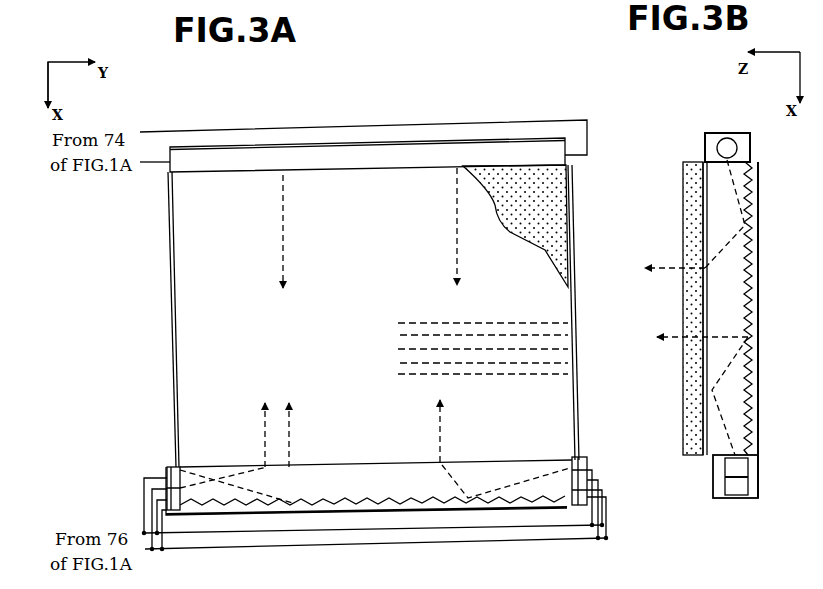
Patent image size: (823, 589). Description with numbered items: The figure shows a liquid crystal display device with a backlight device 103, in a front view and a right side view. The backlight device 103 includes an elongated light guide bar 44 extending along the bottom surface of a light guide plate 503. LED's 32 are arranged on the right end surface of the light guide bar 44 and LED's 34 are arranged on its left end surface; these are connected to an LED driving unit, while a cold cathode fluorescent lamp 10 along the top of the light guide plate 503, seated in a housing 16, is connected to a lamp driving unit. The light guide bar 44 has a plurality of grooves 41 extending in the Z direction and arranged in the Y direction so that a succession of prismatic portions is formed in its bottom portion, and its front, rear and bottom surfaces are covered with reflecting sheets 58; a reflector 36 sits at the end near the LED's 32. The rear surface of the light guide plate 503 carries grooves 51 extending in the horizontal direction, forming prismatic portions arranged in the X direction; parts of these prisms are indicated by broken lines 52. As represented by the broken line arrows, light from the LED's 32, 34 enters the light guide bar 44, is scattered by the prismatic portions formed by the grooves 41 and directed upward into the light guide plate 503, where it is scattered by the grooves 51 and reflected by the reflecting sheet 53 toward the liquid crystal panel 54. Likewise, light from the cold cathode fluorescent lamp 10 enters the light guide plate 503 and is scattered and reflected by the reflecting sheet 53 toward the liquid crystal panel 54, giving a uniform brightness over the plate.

In FIG. 3A, the cold cathode fluorescent lamp 10 is at (460, 155).
In FIG. 3B, the cold cathode fluorescent lamp 10 is at (718, 147).
In FIG. 3A, the lamp reflector 16 is at (552, 140).
In FIG. 3B, the lamp reflector 16 is at (727, 138).
In FIG. 3A, the LED's 32 is at (555, 497).
In FIG. 3B, the LED's 32 is at (730, 490).
In FIG. 3A, the LED's 34 is at (160, 488).
In FIG. 3A, the reflector 36 is at (582, 457).
In FIG. 3B, the reflector 36 is at (742, 498).
In FIG. 3A, the grooves 41 is at (227, 515).
In FIG. 3A, the light guide bar 44 is at (192, 472).
In FIG. 3B, the light guide bar 44 is at (718, 468).
In FIG. 3B, the grooves 51 is at (762, 432).
In FIG. 3A, the broken lines 52 is at (545, 345).
In FIG. 3A, the reflecting sheet 53 is at (372, 500).
In FIG. 3B, the reflecting sheet 53 is at (765, 185).
In FIG. 3A, the liquid crystal panel 54 is at (545, 200).
In FIG. 3B, the liquid crystal panel 54 is at (703, 420).
In FIG. 3A, the reflecting sheets 58 is at (170, 222).
In FIG. 3A, the backlight device 103 is at (158, 346).
In FIG. 3A, the light guide plate 503 is at (190, 305).
In FIG. 3B, the light guide plate 503 is at (720, 362).